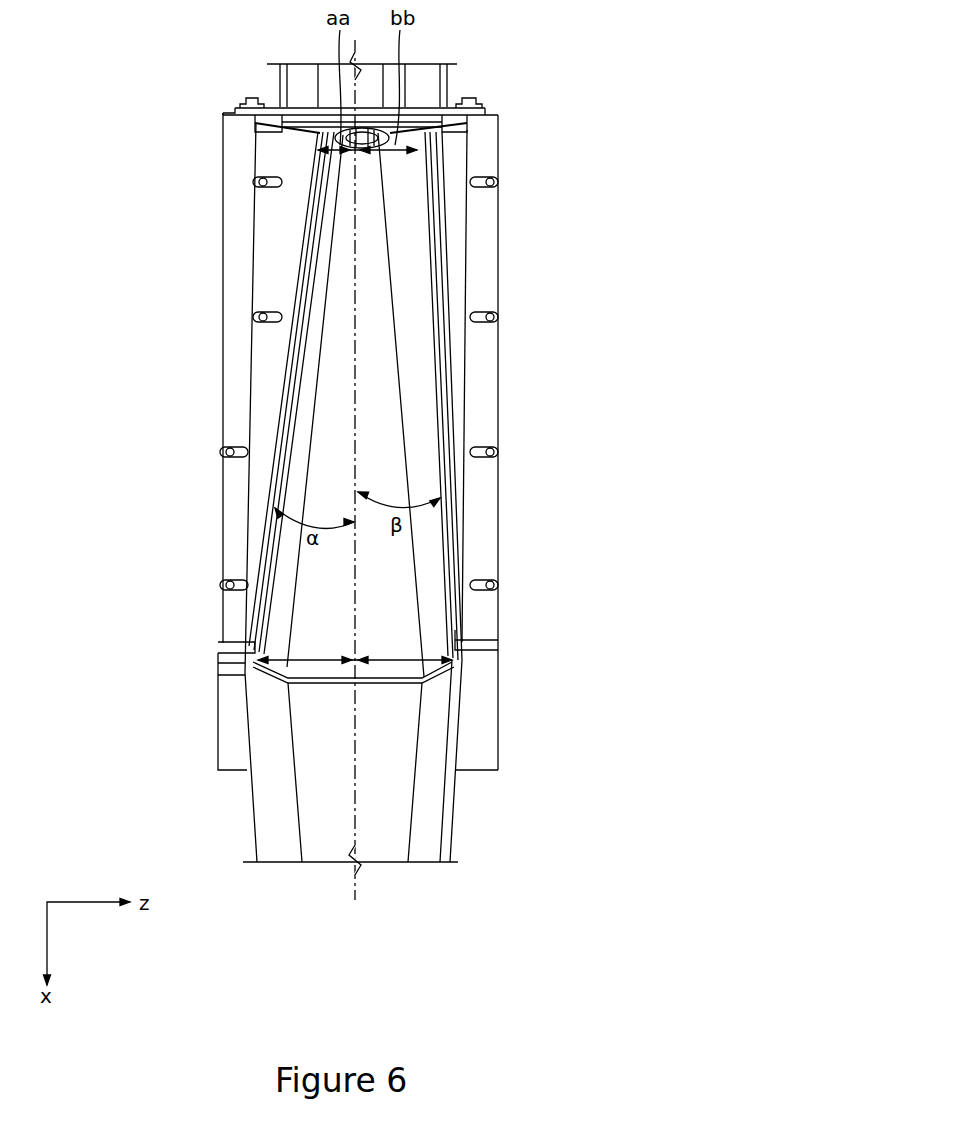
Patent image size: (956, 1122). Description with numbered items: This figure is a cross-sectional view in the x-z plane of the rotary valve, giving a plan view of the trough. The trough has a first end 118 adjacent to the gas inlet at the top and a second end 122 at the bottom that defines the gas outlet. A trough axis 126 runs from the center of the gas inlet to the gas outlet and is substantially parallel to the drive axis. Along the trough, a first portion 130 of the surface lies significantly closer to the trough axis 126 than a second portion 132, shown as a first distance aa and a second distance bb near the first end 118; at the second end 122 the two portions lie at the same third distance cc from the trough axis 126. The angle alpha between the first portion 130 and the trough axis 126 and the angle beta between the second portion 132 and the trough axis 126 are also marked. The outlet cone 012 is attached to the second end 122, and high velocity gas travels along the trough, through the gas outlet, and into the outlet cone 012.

The first end 118 is at (500, 123).
The first portion 130 is at (300, 328).
The second portion 132 is at (440, 378).
The second end 122 is at (485, 660).
The outlet cone 012 is at (455, 790).
The trough axis 126 is at (375, 848).